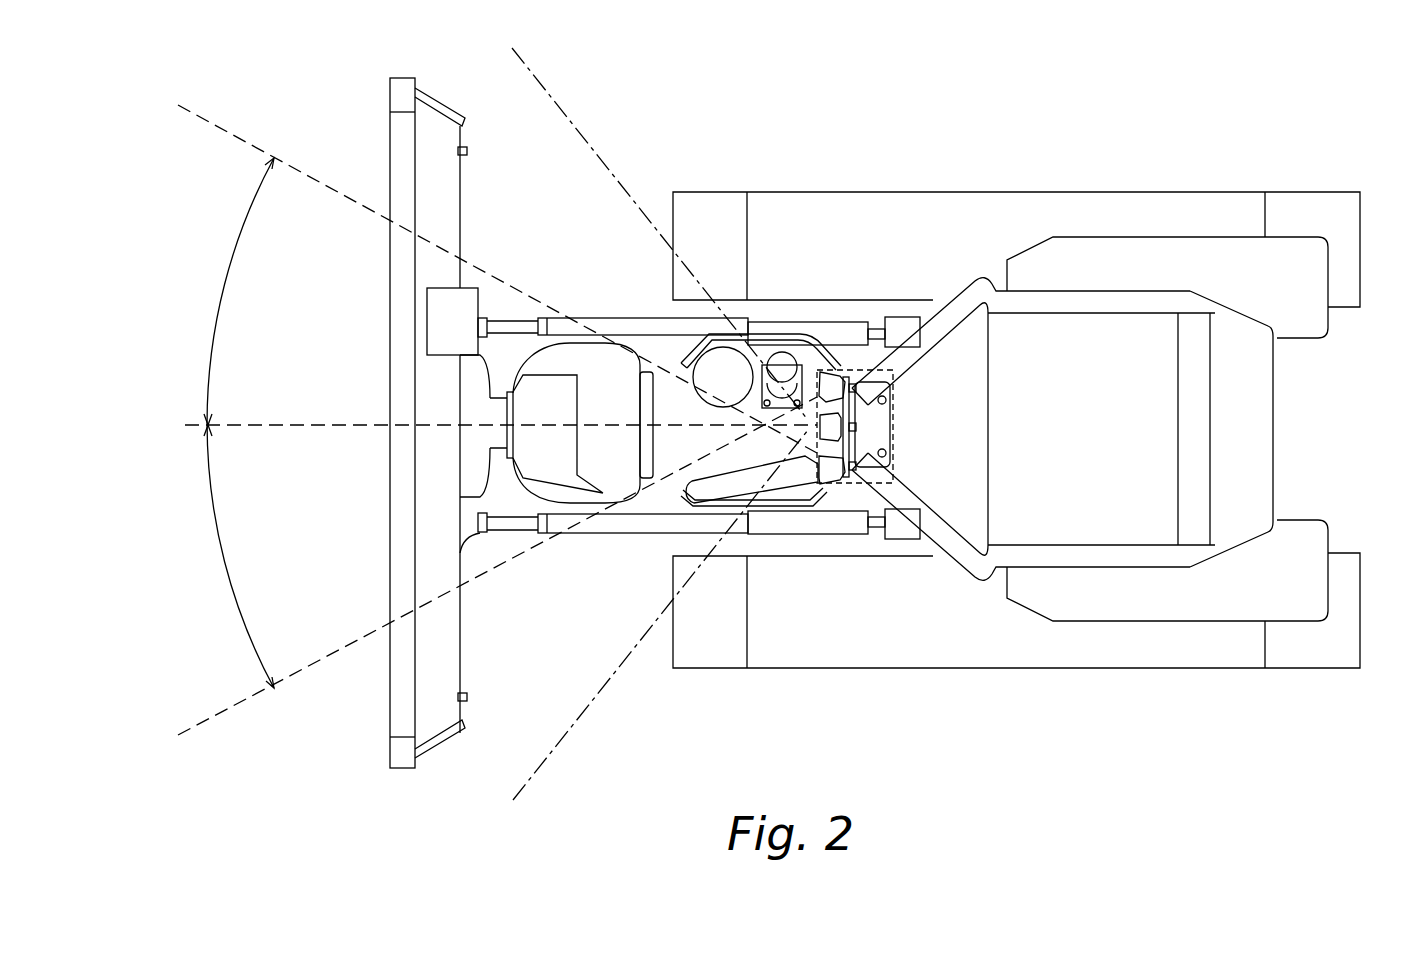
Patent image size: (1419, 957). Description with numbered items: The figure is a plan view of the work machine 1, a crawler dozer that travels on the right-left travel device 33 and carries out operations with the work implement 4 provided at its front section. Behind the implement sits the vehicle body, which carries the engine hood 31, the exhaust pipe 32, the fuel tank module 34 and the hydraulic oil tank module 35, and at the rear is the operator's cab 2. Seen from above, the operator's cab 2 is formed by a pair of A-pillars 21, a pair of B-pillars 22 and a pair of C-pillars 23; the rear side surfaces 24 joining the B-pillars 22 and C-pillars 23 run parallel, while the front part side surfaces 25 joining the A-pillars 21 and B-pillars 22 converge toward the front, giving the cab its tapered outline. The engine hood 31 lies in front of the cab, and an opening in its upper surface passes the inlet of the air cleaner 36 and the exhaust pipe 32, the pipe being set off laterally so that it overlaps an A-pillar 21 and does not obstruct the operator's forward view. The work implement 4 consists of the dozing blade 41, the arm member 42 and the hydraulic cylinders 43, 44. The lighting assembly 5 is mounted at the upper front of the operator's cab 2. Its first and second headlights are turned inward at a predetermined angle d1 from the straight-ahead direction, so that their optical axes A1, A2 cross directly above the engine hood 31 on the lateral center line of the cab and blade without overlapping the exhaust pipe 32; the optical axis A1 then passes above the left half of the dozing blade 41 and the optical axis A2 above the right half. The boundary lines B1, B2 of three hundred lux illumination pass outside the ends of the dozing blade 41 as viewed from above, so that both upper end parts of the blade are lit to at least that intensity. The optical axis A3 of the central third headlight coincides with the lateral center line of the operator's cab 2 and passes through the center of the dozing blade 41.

The work machine 1 is at (968, 140).
The operator's cab 2 is at (1302, 437).
The work implement 4 is at (523, 242).
The lighting assembly 5 is at (897, 417).
The A-pillars 21 is at (837, 357).
The B-pillars 22 is at (1007, 287).
The C-pillars 23 is at (1197, 287).
The rear side surfaces 24 is at (1125, 287).
The front part side surfaces 25 is at (927, 320).
The engine hood 31 is at (667, 443).
The exhaust pipe 32 is at (773, 360).
The right-left travel device 33 is at (1078, 212).
The fuel tank module 34 is at (1313, 288).
The hydraulic oil tank module 35 is at (1317, 592).
The air cleaner 36 is at (710, 370).
The dozing blade 41 is at (407, 473).
The arm member 42 is at (543, 455).
The hydraulic cylinder 43 is at (560, 317).
The hydraulic cylinder 44 is at (775, 322).
The optical axis of the first headlight A1 is at (337, 655).
The optical axis of the second headlight A2 is at (337, 197).
The optical axis of the third headlight A3 is at (297, 420).
The boundary line of 300 lux illumination of the first headlight B1 is at (578, 717).
The boundary line of 300 lux illumination of the second headlight B2 is at (577, 127).
The predetermined angle d1 is at (227, 423).